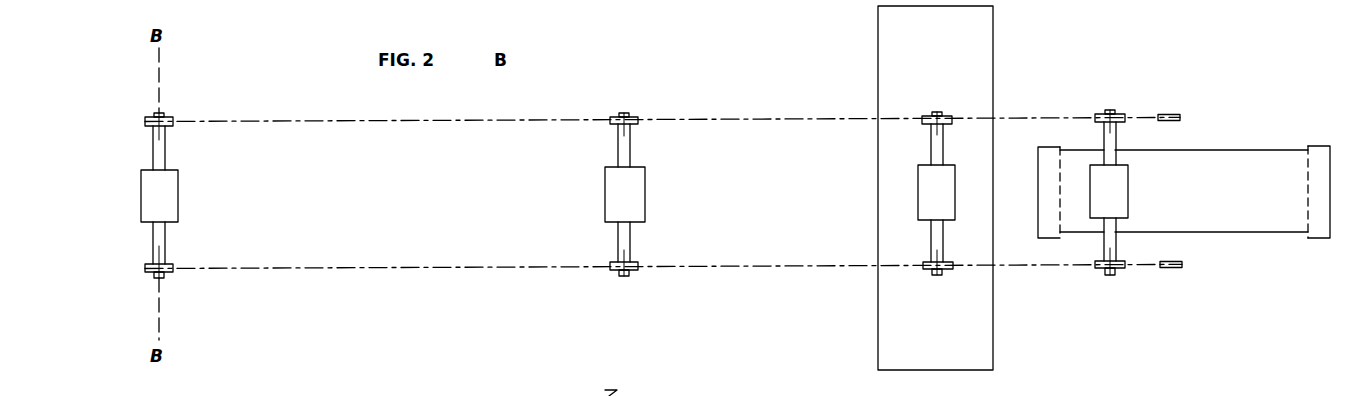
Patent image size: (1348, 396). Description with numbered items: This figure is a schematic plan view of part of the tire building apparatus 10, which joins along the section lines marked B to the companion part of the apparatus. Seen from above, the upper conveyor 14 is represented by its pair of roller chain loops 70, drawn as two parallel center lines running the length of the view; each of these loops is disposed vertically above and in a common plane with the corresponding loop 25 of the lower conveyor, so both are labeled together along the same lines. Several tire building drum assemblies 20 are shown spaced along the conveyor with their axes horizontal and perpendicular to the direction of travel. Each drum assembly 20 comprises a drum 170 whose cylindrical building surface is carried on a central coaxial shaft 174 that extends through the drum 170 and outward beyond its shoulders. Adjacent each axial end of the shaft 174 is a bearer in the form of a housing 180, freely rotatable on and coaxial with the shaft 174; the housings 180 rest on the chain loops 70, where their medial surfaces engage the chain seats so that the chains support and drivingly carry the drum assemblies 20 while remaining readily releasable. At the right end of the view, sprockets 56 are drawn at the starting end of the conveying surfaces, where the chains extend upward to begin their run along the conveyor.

The tire building apparatus 10 is at (560, 274).
The upper conveyor 14 is at (432, 272).
The tire building drum assembly 20 is at (140, 198).
The loop 25 is at (268, 120).
The sprocket 56 is at (1179, 116).
The roller chain loop 70 is at (290, 268).
The drum 170 is at (147, 215).
The shaft 174 is at (157, 154).
The housing 180 is at (144, 120).